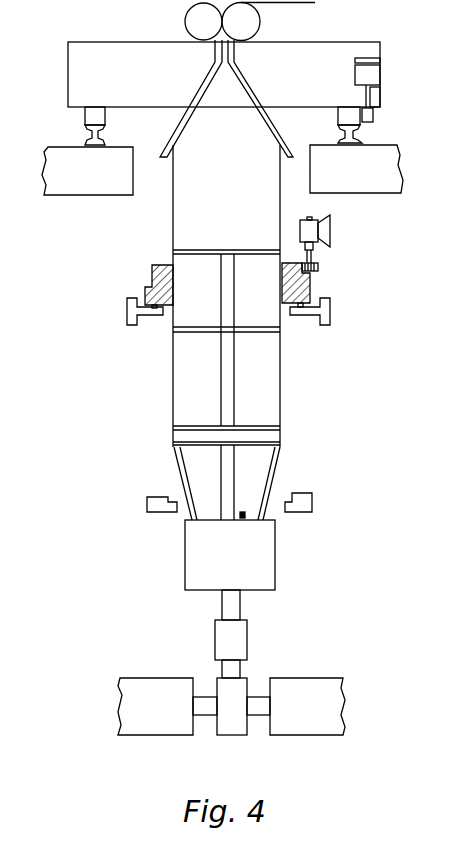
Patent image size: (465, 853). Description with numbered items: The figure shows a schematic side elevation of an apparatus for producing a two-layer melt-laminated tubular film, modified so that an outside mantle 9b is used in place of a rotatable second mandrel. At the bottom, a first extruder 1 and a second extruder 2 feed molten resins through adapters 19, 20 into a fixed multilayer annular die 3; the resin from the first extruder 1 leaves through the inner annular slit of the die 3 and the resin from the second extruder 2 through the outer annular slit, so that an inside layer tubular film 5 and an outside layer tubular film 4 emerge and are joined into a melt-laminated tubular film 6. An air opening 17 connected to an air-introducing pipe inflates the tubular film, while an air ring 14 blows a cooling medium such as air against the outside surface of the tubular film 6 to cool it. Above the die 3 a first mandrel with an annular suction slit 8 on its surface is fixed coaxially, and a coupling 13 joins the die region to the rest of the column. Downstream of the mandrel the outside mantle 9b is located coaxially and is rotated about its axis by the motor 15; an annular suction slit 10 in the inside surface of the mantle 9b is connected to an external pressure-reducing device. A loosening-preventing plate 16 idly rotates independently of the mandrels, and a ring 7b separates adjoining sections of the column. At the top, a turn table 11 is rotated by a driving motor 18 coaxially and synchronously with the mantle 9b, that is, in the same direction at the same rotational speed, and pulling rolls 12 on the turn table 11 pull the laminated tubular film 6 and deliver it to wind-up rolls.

The first extruder 1 is at (330, 686).
The second extruder 2 is at (130, 686).
The fixed multilayer annular die 3 is at (275, 573).
The outside layer tubular film 4 is at (180, 492).
The inside layer tubular film 5 is at (181, 474).
The melt-laminated tubular film 6 is at (172, 384).
The ring 7b is at (280, 437).
The annular suction slit 8 is at (185, 437).
The outside mantle 9b is at (312, 286).
The annular suction slit 10 is at (175, 298).
The turn table 11 is at (73, 75).
The pulling rolls 12 is at (262, 26).
The coupling 13 is at (247, 632).
The air ring 14 is at (312, 498).
The motor 15 is at (330, 226).
The loosening-preventing plate 16 is at (283, 333).
The air opening 17 is at (245, 517).
The driving motor 18 is at (380, 73).
The adapter 19 is at (247, 690).
The adapter 20 is at (207, 697).